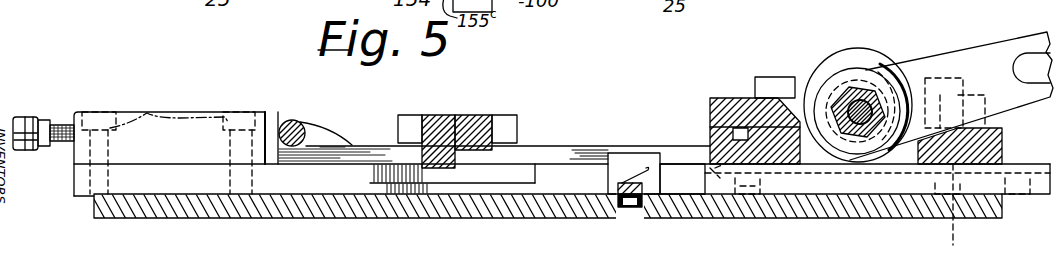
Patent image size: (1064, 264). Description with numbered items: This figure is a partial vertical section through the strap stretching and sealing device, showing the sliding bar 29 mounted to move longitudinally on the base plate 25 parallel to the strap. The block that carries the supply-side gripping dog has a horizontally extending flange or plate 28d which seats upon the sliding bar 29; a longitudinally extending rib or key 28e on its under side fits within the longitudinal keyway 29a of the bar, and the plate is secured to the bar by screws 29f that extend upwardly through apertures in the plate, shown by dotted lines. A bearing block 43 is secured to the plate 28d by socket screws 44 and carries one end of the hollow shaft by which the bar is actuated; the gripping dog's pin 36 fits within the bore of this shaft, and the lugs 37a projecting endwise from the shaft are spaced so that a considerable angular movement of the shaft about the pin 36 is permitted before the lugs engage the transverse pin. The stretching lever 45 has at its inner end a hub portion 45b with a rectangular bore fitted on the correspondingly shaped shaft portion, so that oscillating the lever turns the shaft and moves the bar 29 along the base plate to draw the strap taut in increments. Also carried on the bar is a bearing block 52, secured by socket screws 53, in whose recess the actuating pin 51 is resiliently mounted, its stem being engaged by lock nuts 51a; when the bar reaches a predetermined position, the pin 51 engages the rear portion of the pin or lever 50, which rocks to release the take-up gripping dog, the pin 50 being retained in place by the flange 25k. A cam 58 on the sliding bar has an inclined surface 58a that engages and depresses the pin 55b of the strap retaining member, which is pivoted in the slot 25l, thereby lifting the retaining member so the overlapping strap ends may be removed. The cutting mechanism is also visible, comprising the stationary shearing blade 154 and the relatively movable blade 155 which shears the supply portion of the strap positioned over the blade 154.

The base plate 25 is at (310, 210).
The flange 25k is at (318, 136).
The slot 25l is at (617, 212).
The horizontally extending flange or plate 28d is at (730, 97).
The longitudinally extending rib or key 28e is at (877, 181).
The sliding bar 29 is at (80, 186).
The longitudinal keyway 29a is at (718, 176).
The screws 29f is at (740, 240).
The pin 36 is at (853, 138).
The lugs 37a is at (878, 136).
The bearing block 43 is at (858, 50).
The socket screws 44 is at (776, 77).
The stretching lever 45 is at (1030, 36).
The hub portion 45b is at (889, 85).
The pin or lever 50 is at (300, 122).
The actuating pin 51 is at (62, 142).
The lock nuts 51a is at (24, 117).
The bearing block 52 is at (227, 112).
The socket screws 53 is at (148, 112).
The cam 58 is at (620, 172).
The inclined surface 58a is at (645, 170).
The pin 55b is at (628, 210).
The shearing blade 154 is at (450, 98).
The movable blade 155 is at (470, 122).